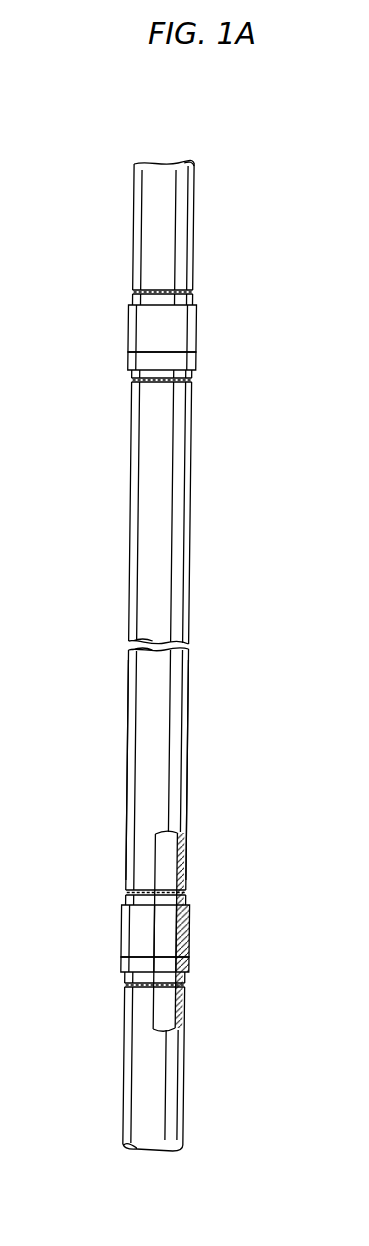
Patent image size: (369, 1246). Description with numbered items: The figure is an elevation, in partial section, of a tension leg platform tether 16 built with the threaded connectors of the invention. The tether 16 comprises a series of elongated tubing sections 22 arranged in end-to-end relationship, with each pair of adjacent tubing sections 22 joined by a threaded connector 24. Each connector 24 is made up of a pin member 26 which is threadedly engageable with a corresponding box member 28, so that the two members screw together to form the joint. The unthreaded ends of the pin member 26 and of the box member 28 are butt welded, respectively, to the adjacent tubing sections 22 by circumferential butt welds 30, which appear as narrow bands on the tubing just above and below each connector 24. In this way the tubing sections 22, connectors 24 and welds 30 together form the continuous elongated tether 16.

The tether 16 is at (100, 698).
The tubing section 22 is at (195, 219).
The threaded connector 24 is at (150, 642).
The pin member 26 is at (128, 360).
The box member 28 is at (128, 324).
The circumferential butt weld 30 is at (192, 281).